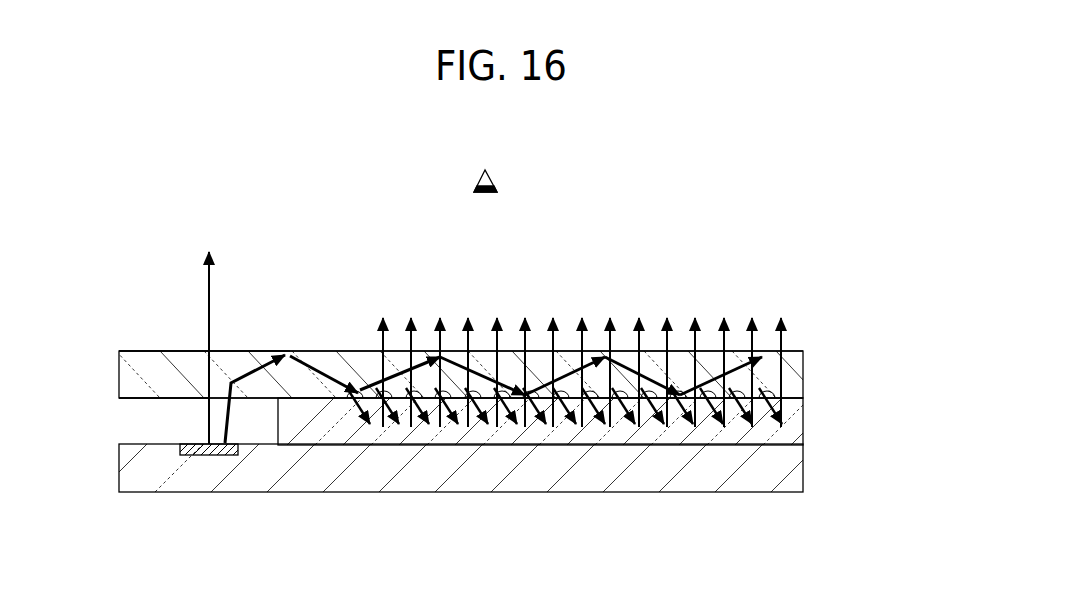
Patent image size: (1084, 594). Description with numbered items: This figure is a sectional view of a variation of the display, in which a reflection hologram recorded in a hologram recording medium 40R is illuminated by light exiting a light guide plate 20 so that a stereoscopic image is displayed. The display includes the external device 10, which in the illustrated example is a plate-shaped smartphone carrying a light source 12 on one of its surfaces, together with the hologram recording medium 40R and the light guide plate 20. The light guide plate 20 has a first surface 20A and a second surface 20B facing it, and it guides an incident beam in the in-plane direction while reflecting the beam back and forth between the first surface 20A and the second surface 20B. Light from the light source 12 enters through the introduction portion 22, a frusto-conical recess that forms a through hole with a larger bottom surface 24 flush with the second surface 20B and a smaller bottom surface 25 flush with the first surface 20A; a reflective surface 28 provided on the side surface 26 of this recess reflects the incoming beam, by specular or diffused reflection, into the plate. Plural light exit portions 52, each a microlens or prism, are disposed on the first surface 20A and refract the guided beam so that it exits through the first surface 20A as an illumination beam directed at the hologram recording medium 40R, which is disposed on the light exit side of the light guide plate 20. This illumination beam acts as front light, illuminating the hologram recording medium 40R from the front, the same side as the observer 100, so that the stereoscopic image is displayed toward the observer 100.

The observer 100 is at (493, 178).
The external device 10 is at (800, 468).
The light source 12 is at (220, 459).
The light guide plate 20 is at (803, 375).
The first surface 20A is at (803, 397).
The second surface 20B is at (802, 351).
The introduction portion 22 is at (229, 343).
The bottom surface 24 is at (195, 349).
The bottom surface 25 is at (200, 399).
The side surface 26 is at (258, 358).
The reflective surface 28 is at (493, 375).
The hologram recording medium 40R is at (799, 424).
The light exit portions 52 is at (563, 388).